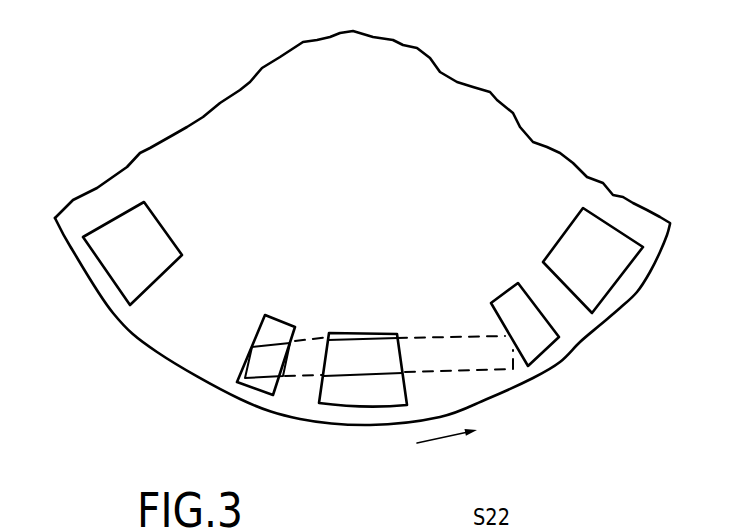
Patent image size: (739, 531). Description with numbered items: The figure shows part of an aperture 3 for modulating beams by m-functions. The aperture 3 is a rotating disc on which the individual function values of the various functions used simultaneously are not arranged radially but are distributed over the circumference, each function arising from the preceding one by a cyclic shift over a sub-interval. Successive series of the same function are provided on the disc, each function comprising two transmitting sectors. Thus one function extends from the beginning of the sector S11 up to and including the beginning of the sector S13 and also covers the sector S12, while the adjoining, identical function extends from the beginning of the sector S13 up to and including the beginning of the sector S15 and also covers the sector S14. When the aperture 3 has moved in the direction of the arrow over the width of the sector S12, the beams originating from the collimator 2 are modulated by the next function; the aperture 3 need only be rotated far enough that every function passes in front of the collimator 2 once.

The aperture 3 is at (482, 392).
The collimator 2 is at (337, 365).
The sector S11 is at (605, 285).
The sector S12 is at (548, 339).
The sector S13 is at (367, 398).
The sector S14 is at (267, 383).
The sector S15 is at (123, 275).